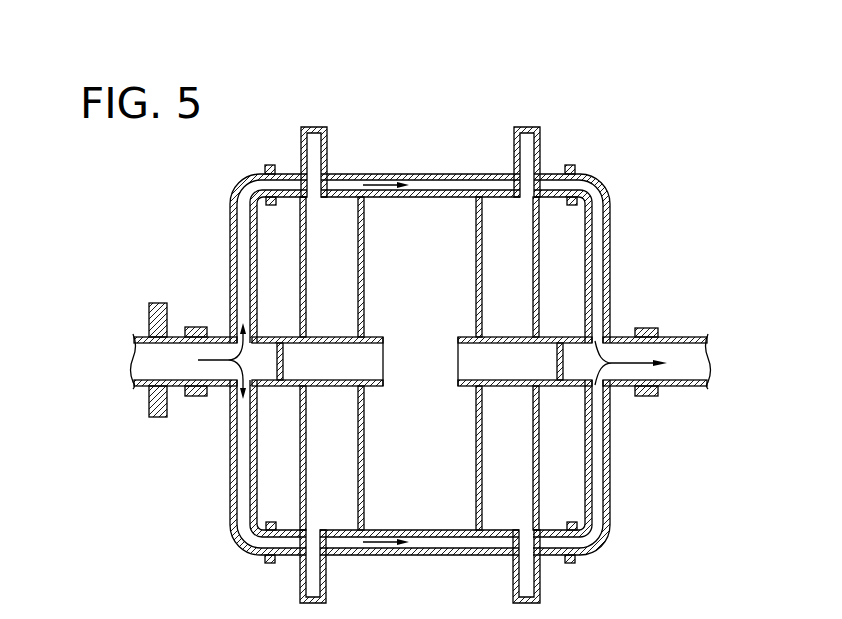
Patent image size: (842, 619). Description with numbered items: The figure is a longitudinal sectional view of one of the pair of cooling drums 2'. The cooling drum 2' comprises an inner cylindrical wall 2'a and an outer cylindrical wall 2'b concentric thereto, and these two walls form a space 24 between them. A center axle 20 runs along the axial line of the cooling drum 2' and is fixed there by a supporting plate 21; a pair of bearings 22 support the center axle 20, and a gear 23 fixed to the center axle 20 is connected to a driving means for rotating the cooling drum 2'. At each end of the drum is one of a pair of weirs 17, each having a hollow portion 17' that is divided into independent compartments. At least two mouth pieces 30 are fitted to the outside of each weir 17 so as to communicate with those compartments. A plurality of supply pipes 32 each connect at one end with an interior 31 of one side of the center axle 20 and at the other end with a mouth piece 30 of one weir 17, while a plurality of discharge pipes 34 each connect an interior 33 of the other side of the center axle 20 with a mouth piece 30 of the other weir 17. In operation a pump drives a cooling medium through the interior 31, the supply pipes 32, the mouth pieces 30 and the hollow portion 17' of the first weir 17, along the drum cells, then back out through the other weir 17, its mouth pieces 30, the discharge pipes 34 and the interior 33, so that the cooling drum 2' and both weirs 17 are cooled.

The cooling drum 2' is at (421, 327).
The inner cylindrical wall 2'a is at (401, 504).
The outer cylindrical wall 2'b is at (403, 153).
The weir 17 is at (422, 336).
The hollow portion 17' is at (420, 342).
The center axle 20 is at (177, 337).
The supporting plate 21 is at (307, 277).
The bearing 22 is at (203, 327).
The gear 23 is at (149, 315).
The space 24 is at (463, 185).
The mouth piece 30 is at (288, 170).
The interior of one side of the center axle 31 is at (177, 372).
The supply pipe 32 is at (232, 207).
The interior of the other side of the center axle 33 is at (623, 378).
The discharge pipe 34 is at (612, 230).